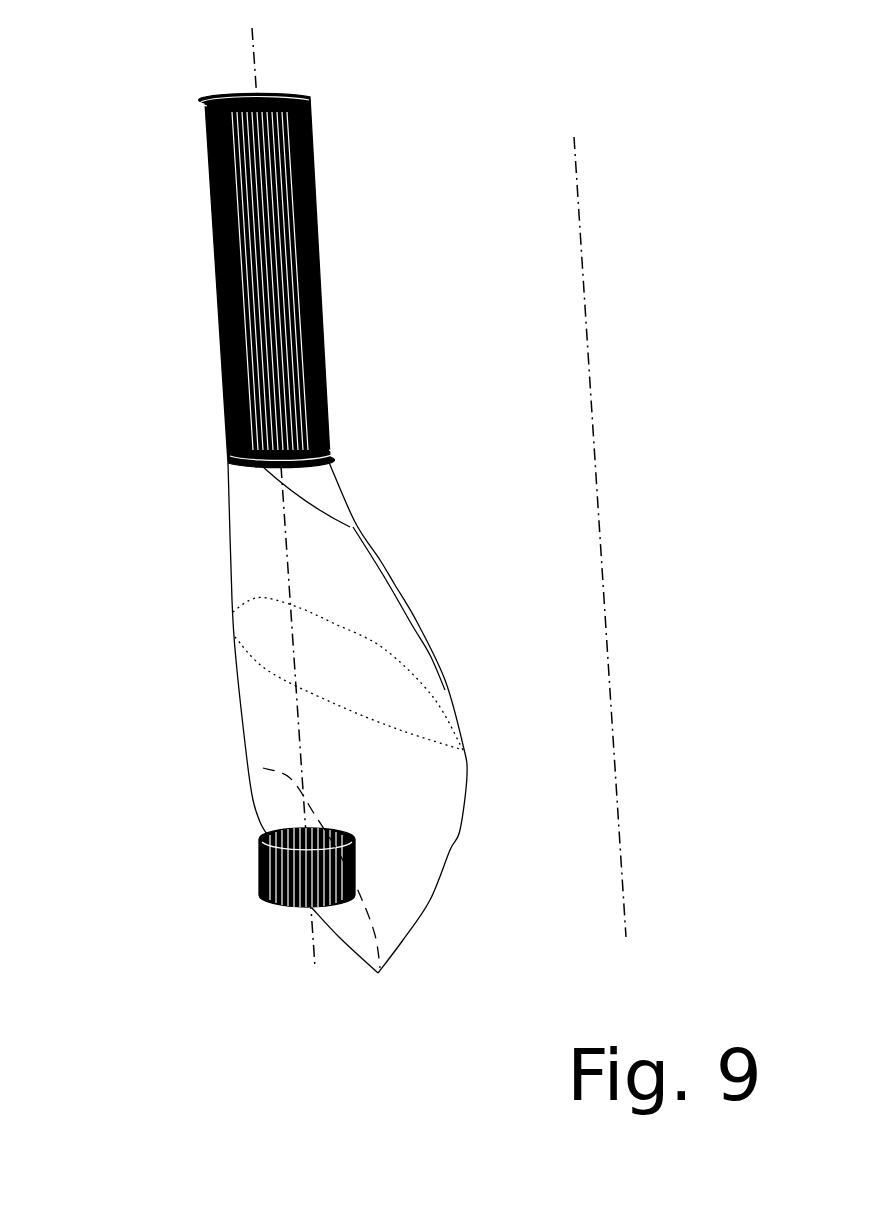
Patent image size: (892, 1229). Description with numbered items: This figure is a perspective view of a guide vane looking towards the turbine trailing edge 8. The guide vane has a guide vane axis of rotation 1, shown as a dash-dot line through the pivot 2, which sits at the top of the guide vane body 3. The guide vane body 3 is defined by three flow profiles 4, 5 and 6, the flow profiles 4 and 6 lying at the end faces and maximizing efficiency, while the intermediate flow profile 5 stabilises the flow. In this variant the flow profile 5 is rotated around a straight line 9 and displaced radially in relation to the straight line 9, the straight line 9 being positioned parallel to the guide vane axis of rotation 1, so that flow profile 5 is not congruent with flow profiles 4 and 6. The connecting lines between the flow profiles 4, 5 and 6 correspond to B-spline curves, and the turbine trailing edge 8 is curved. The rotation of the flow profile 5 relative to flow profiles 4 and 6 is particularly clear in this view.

The guide vane axis of rotation 1 is at (258, 70).
The pivot 2 is at (317, 225).
The guide vane body 3 is at (383, 623).
The flow profile 4 is at (325, 467).
The flow profile 5 is at (265, 670).
The flow profile 6 is at (253, 810).
The turbine trailing edge 8 is at (422, 912).
The straight line 9 is at (585, 245).